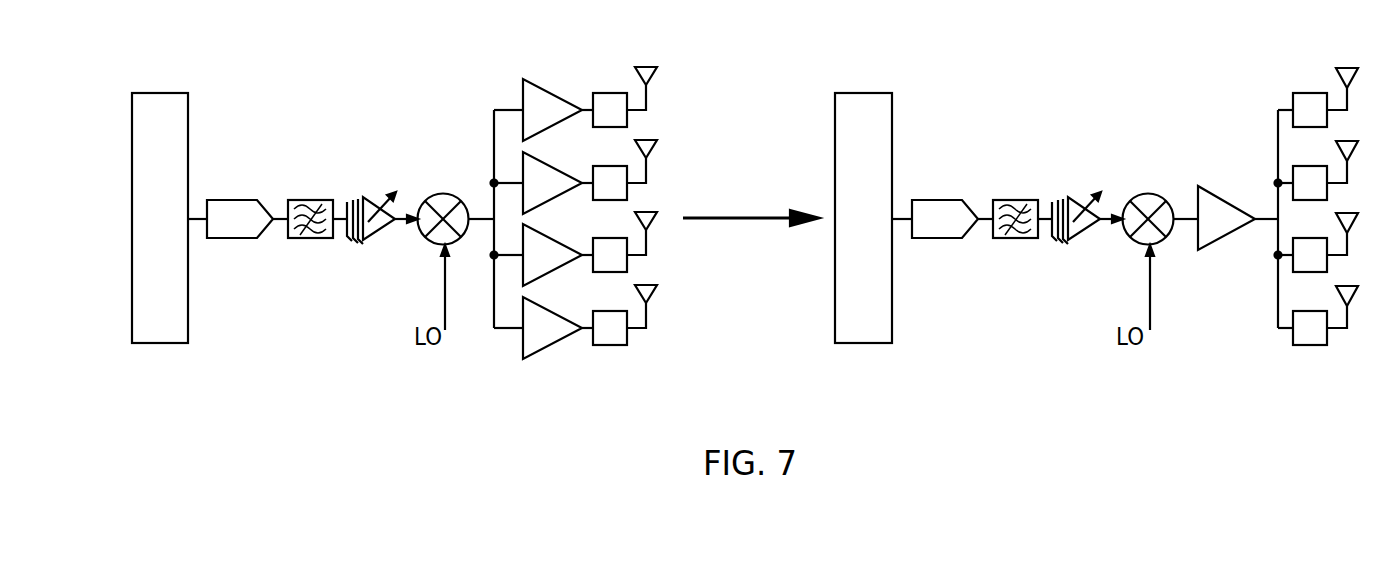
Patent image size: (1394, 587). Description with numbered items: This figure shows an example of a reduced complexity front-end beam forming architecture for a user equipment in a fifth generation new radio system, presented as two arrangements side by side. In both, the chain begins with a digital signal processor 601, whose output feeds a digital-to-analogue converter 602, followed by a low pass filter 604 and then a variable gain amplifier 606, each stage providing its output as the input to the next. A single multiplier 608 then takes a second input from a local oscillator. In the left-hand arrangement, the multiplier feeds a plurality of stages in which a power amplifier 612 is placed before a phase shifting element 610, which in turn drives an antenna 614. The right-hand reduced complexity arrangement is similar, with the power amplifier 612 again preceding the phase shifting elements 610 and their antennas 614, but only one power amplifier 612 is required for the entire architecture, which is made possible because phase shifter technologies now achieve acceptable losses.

The digital signal processor 601 is at (153, 330).
The digital-to-analogue converter 602 is at (240, 238).
The low pass filter 604 is at (312, 238).
The variable gain amplifier 606 is at (372, 203).
The multiplier 608 is at (446, 193).
The phase shifting element 610 is at (608, 93).
The power amplifier 612 is at (530, 78).
The antenna 614 is at (647, 67).